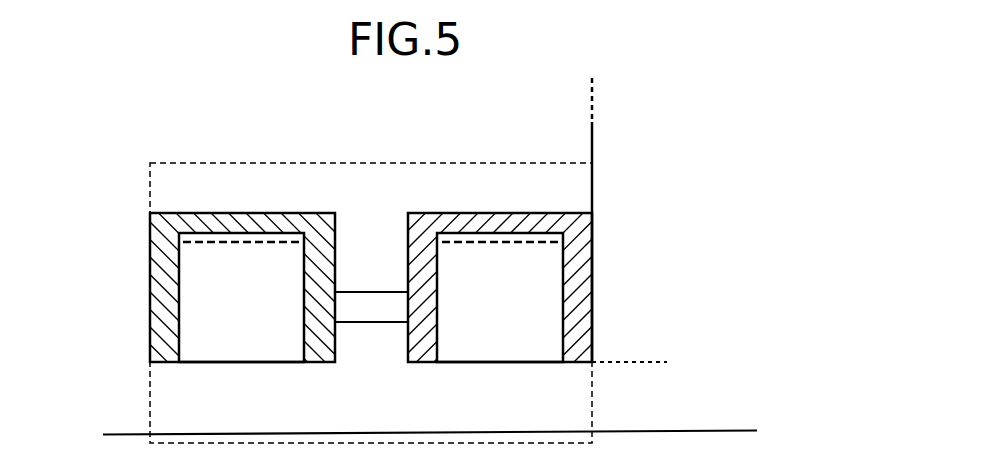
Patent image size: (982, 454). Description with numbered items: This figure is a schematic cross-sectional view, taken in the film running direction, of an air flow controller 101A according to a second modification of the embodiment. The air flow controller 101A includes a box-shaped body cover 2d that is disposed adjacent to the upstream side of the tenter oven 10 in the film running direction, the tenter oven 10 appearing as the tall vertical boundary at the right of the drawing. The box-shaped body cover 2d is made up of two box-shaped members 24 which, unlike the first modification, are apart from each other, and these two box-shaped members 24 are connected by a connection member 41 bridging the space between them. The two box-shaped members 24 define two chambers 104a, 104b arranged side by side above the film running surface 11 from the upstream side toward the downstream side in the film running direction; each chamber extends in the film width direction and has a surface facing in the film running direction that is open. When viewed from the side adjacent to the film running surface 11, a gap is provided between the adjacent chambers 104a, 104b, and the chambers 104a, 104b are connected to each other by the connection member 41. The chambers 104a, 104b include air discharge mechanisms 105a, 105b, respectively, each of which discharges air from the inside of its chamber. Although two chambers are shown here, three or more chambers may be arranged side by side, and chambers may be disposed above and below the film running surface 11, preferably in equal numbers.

The tenter oven 10 is at (615, 150).
The film running surface 11 is at (130, 434).
The air flow controller 101A is at (162, 161).
The box-shaped body cover 2d is at (296, 182).
The box-shaped member 24 is at (165, 333).
The connection member 41 is at (370, 292).
The chamber 104a is at (222, 296).
The chamber 104b is at (522, 296).
The air discharge mechanism 105a is at (208, 243).
The air discharge mechanism 105b is at (532, 243).